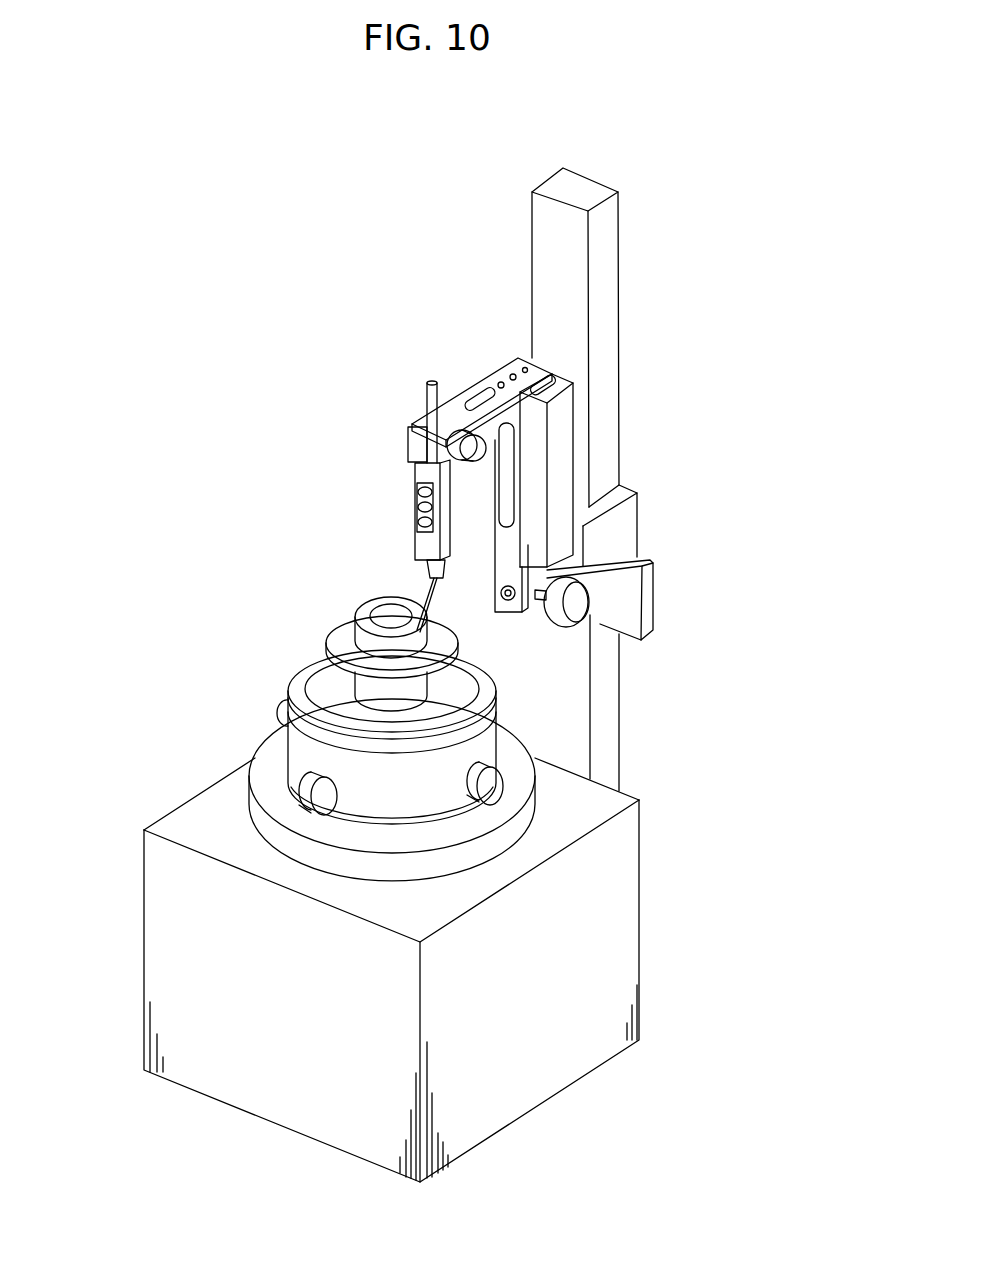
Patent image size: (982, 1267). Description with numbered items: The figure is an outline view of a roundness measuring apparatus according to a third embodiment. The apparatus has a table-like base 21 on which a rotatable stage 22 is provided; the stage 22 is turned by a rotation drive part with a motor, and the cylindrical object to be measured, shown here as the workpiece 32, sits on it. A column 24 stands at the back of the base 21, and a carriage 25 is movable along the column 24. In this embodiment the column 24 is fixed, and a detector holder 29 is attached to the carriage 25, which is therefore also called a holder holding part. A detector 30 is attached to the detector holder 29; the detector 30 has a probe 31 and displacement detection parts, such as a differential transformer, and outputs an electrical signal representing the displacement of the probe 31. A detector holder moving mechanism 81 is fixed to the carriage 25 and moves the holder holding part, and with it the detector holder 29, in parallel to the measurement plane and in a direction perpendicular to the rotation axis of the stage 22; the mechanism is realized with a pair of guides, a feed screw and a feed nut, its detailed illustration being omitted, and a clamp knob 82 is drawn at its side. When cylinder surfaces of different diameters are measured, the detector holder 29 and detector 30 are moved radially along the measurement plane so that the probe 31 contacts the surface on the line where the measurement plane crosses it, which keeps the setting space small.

The base 21 is at (145, 973).
The stage 22 is at (288, 690).
The column 24 is at (620, 302).
The carriage 25 is at (636, 518).
The detector holder 29 is at (475, 383).
The detector 30 is at (415, 512).
The probe 31 is at (413, 578).
The workpiece 32 is at (326, 630).
The detector holder moving mechanism 81 is at (630, 605).
The clamp knob 82 is at (627, 560).